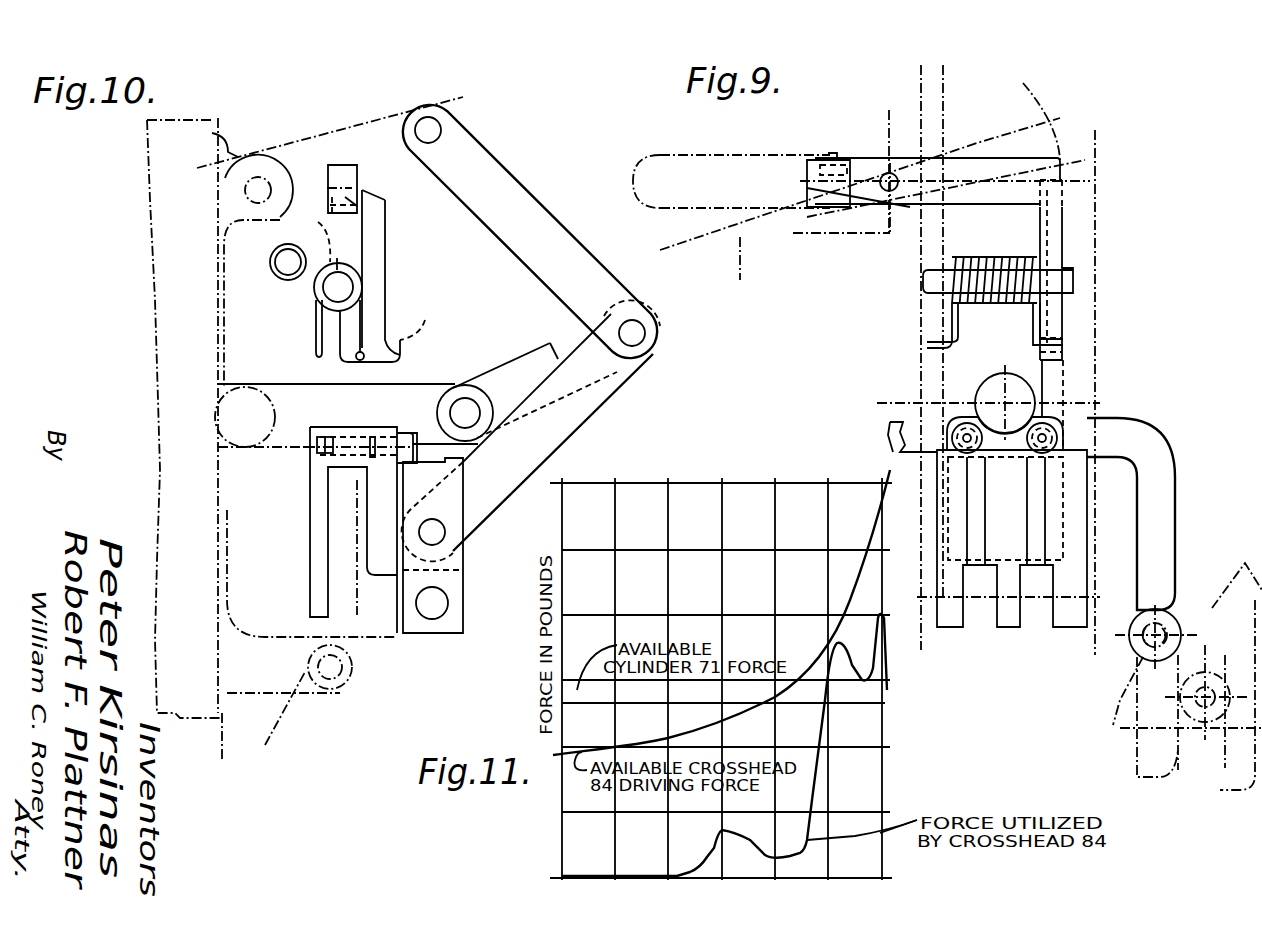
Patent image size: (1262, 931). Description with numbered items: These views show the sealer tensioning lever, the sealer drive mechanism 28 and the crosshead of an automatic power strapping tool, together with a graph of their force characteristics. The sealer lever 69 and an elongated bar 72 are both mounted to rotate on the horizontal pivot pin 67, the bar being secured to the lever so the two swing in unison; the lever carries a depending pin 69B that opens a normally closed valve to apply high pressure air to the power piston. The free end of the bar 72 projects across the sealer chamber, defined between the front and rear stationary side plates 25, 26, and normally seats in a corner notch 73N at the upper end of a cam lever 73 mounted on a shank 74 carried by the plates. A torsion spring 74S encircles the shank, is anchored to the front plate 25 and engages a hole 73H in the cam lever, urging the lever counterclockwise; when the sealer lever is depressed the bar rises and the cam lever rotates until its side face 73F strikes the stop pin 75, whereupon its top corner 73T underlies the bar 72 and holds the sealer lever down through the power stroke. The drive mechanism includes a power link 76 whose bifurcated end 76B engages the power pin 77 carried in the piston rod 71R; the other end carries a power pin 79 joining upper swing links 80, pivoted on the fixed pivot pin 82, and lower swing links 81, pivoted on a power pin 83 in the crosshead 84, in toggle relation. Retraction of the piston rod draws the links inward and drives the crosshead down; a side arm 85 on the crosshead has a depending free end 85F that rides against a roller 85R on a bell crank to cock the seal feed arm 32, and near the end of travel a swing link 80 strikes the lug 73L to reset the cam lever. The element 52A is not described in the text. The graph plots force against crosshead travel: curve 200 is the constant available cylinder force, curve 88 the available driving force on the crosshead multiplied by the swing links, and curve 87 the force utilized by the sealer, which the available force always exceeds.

In FIG. 9, the front stationary side plate 25 is at (937, 242).
In FIG. 9, the rear stationary side plate 26 is at (1080, 249).
In FIG. 10, the sealer drive mechanism 28 is at (666, 341).
In FIG. 9, the seal feed arm 32 is at (1176, 676).
In FIG. 9, the bracket 52A is at (953, 437).
In FIG. 9, the horizontal pivot pin 67 is at (888, 173).
In FIG. 9, the sealer lever 69 is at (722, 153).
In FIG. 9, the depending pin 69B is at (815, 195).
In FIG. 10, the piston rod 71R is at (302, 389).
In FIG. 9, the piston rod 71R is at (993, 390).
In FIG. 10, the elongated bar 72 is at (328, 178).
In FIG. 9, the elongated bar 72 is at (968, 168).
In FIG. 10, the cam lever 73 is at (380, 269).
In FIG. 9, the cam lever 73 is at (1055, 229).
In FIG. 10, the side face of cam lever 73F is at (243, 222).
In FIG. 10, the hole in cam lever 73H is at (365, 364).
In FIG. 9, the hole in cam lever 73H is at (1063, 352).
In FIG. 10, the lug 73L is at (425, 320).
In FIG. 10, the corner notch 73N is at (350, 200).
In FIG. 10, the top corner of cam lever 73T is at (373, 208).
In FIG. 10, the shank 74 is at (345, 287).
In FIG. 9, the shank 74 is at (1072, 287).
In FIG. 10, the torsion spring 74S is at (345, 265).
In FIG. 9, the torsion spring 74S is at (977, 260).
In FIG. 10, the stop pin 75 is at (287, 264).
In FIG. 10, the power link 76 is at (573, 332).
In FIG. 10, the bifurcated end 76B is at (474, 381).
In FIG. 10, the power pin 77 is at (465, 413).
In FIG. 10, the power pin 79 is at (640, 329).
In FIG. 10, the upper swing links 80 is at (538, 224).
In FIG. 10, the lower swing links 81 is at (565, 424).
In FIG. 10, the fixed pivot pin 82 is at (432, 128).
In FIG. 10, the power pin 83 is at (436, 529).
In FIG. 10, the crosshead 84 is at (455, 565).
In FIG. 9, the crosshead 84 is at (1077, 485).
In FIG. 10, the side arm 85 is at (318, 542).
In FIG. 9, the side arm 85 is at (1150, 459).
In FIG. 9, the depending free end 85F is at (1165, 582).
In FIG. 9, the roller 85R is at (1180, 621).
In FIG. 11, the force-travel curve of seal forming mechanism 87 is at (818, 785).
In FIG. 11, the force-travel curve of swing link system 88 is at (817, 650).
In FIG. 11, the available cylinder force curve 200 is at (798, 685).